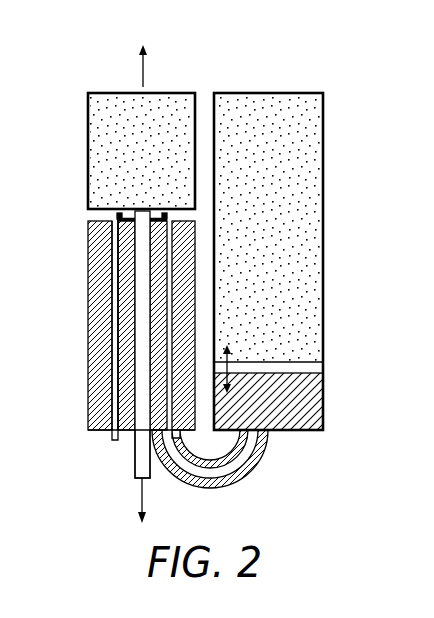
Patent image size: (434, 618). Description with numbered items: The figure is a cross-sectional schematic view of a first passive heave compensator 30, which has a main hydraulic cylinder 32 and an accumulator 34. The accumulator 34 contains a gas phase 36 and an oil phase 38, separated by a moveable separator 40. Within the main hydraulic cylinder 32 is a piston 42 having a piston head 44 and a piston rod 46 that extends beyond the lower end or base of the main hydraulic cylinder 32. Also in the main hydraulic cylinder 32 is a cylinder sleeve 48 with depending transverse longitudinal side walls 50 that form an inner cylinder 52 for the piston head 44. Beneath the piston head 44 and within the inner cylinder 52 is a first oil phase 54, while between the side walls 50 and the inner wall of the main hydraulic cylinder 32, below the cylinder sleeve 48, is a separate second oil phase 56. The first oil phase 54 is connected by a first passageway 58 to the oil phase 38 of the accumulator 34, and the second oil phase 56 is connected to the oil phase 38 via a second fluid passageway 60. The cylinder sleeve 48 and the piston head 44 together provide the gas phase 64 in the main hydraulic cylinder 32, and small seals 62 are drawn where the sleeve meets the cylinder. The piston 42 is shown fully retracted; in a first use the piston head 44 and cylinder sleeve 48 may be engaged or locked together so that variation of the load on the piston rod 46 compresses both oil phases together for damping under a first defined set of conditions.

The first passive heave compensator 30 is at (79, 68).
The main hydraulic cylinder 32 is at (88, 149).
The accumulator 34 is at (322, 250).
The gas phase 36 is at (312, 132).
The oil phase 38 is at (320, 406).
The moveable separator 40 is at (323, 364).
The piston 42 is at (134, 338).
The piston head 44 is at (143, 212).
The piston rod 46 is at (135, 463).
The cylinder sleeve 48 is at (97, 213).
The side walls 50 is at (168, 311).
The inner cylinder 52 is at (125, 373).
The first oil phase 54 is at (130, 411).
The second oil phase 56 is at (100, 255).
The first passageway 58 is at (265, 448).
The second fluid passageway 60 is at (246, 474).
The seal 62 is at (117, 214).
The gas phase 64 is at (98, 113).